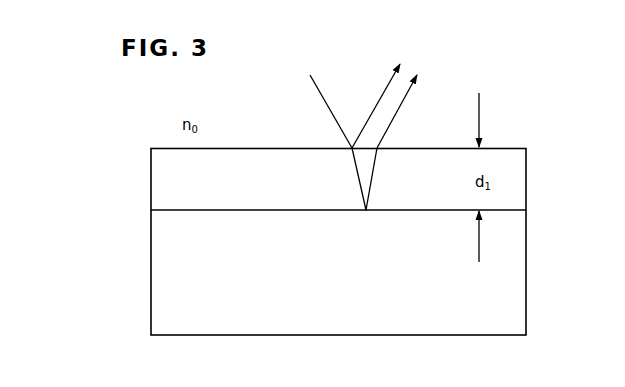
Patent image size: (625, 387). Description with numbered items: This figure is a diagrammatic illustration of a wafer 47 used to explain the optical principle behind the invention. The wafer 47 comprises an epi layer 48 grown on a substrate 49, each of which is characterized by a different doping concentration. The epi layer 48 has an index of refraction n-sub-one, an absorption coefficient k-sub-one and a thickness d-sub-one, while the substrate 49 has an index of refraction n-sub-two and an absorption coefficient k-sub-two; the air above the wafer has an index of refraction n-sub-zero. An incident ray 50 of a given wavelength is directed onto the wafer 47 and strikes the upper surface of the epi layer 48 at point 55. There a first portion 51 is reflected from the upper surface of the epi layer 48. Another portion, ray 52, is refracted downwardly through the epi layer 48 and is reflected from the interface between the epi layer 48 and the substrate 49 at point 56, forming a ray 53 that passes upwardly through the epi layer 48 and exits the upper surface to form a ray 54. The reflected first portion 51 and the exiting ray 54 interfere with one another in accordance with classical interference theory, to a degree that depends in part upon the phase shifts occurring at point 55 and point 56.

The wafer 47 is at (148, 295).
The epi layer 48 is at (157, 192).
The substrate 49 is at (158, 245).
The incident ray 50 is at (323, 102).
The first portion 51 is at (380, 91).
The ray 52 is at (360, 175).
The ray 53 is at (373, 172).
The ray 54 is at (398, 113).
The point 55 is at (342, 143).
The point 56 is at (368, 214).